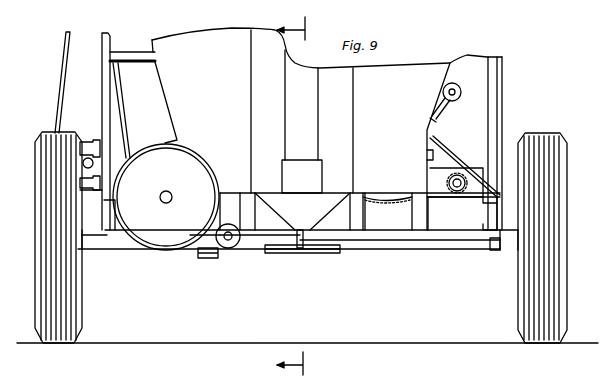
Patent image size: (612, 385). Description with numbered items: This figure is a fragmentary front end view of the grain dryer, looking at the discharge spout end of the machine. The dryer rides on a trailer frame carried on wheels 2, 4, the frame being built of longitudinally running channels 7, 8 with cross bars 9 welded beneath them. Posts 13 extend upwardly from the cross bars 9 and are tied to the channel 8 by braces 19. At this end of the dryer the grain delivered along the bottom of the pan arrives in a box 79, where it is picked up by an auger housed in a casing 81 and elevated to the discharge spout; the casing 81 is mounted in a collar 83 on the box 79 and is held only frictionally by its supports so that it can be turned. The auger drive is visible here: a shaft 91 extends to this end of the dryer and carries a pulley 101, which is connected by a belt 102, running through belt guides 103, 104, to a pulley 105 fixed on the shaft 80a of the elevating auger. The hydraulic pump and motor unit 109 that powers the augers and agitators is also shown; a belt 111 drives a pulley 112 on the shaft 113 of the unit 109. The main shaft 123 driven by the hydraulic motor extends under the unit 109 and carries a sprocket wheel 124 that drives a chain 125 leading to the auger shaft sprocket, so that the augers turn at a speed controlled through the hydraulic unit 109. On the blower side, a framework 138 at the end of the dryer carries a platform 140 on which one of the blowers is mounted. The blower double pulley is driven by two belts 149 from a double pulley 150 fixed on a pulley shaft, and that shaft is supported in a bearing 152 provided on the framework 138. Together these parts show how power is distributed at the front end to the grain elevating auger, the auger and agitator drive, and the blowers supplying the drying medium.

The wheel 2 is at (565, 190).
The wheel 4 is at (33, 173).
The channel 7 is at (110, 250).
The channel 8 is at (490, 240).
The cross bar 9 is at (438, 243).
The post 13 is at (300, 200).
The brace 19 is at (448, 160).
The box 79 is at (307, 218).
The shaft of the auger 80a is at (302, 238).
The casing 81 is at (290, 105).
The collar 83 is at (315, 172).
The shaft 91 is at (172, 197).
The pulley 101 is at (170, 174).
The belt 102 is at (190, 252).
The belt guide 103 is at (232, 242).
The belt guide 104 is at (222, 257).
The pulley 105 is at (330, 253).
The hydraulic pump and motor unit 109 is at (478, 62).
The belt 111 is at (433, 115).
The pulley 112 is at (461, 93).
The shaft 113 is at (452, 86).
The main shaft 123 is at (455, 191).
The sprocket wheel 124 is at (459, 192).
The chain 125 is at (375, 193).
The framework 138 is at (105, 78).
The platform 140 is at (122, 55).
The belt 149 is at (58, 62).
The double pulley 150 is at (97, 128).
The bearing 152 is at (95, 158).